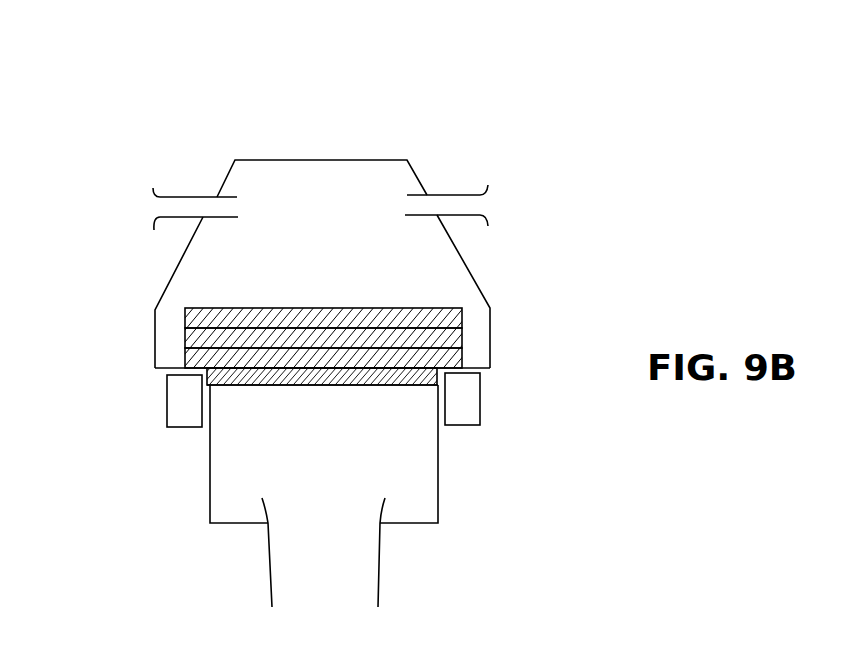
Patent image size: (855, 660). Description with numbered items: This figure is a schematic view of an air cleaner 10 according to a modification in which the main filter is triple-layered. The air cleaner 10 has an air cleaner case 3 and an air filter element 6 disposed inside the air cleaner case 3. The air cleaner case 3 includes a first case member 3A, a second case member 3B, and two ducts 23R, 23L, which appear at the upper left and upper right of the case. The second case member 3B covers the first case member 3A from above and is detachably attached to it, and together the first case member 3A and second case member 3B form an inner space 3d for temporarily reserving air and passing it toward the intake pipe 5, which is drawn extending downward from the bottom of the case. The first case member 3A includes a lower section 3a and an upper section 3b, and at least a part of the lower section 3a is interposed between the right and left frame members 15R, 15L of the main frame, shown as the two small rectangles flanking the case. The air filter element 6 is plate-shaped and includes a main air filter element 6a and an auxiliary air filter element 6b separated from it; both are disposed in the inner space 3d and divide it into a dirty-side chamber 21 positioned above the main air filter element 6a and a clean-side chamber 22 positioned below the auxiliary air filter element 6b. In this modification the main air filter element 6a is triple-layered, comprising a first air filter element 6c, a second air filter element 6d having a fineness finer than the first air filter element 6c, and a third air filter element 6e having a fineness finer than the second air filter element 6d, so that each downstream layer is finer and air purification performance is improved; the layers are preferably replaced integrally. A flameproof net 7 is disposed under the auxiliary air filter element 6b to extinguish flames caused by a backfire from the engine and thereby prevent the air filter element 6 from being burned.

The air cleaner 10 is at (401, 142).
The air cleaner case 3 is at (584, 325).
The first case member 3A is at (547, 355).
The second case member 3B is at (492, 326).
The lower section 3a is at (440, 452).
The upper section 3b is at (492, 368).
The inner space 3d is at (330, 425).
The intake pipe 5 is at (382, 573).
The air filter element 6 is at (51, 338).
The main air filter element 6a is at (98, 317).
The auxiliary air filter element 6b is at (207, 375).
The first air filter element 6c is at (185, 318).
The second air filter element 6d is at (185, 338).
The third air filter element 6e is at (185, 356).
The flameproof net 7 is at (247, 390).
The left frame member 15L is at (167, 413).
The right frame member 15R is at (445, 412).
The dirty-side chamber 21 is at (460, 258).
The clean-side chamber 22 is at (432, 487).
The duct 23L is at (189, 197).
The duct 23R is at (455, 195).